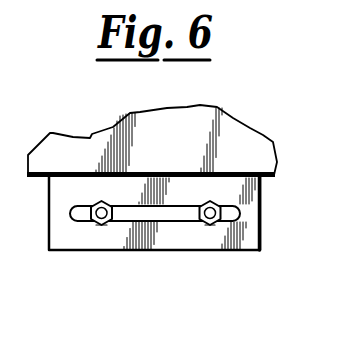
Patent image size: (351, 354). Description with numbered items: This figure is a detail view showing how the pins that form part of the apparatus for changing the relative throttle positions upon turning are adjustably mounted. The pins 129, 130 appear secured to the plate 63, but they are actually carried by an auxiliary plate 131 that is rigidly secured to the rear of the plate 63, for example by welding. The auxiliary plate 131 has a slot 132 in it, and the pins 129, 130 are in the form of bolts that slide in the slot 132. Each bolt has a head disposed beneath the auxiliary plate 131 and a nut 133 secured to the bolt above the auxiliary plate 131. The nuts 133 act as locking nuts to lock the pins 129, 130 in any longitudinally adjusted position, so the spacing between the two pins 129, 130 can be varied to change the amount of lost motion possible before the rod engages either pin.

The plate 63 is at (76, 135).
The pin 129 is at (97, 218).
The pin 130 is at (218, 222).
The auxiliary plate 131 is at (178, 251).
The slot 132 is at (172, 222).
The nut 133 is at (96, 225).